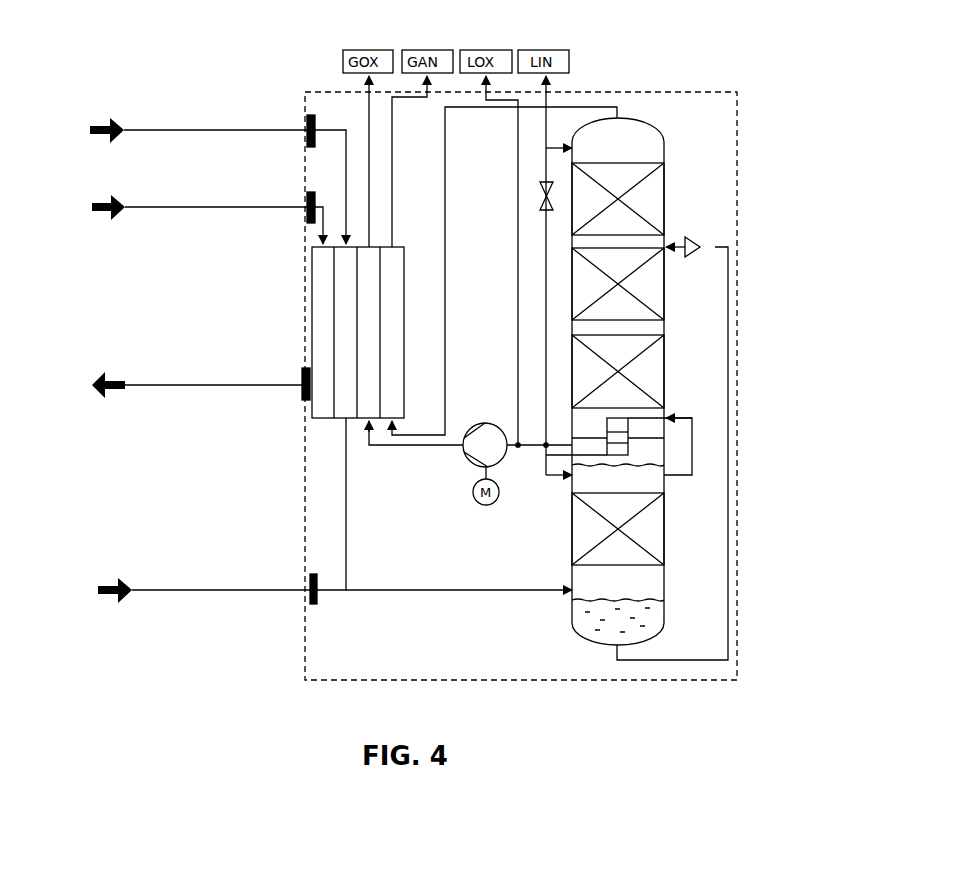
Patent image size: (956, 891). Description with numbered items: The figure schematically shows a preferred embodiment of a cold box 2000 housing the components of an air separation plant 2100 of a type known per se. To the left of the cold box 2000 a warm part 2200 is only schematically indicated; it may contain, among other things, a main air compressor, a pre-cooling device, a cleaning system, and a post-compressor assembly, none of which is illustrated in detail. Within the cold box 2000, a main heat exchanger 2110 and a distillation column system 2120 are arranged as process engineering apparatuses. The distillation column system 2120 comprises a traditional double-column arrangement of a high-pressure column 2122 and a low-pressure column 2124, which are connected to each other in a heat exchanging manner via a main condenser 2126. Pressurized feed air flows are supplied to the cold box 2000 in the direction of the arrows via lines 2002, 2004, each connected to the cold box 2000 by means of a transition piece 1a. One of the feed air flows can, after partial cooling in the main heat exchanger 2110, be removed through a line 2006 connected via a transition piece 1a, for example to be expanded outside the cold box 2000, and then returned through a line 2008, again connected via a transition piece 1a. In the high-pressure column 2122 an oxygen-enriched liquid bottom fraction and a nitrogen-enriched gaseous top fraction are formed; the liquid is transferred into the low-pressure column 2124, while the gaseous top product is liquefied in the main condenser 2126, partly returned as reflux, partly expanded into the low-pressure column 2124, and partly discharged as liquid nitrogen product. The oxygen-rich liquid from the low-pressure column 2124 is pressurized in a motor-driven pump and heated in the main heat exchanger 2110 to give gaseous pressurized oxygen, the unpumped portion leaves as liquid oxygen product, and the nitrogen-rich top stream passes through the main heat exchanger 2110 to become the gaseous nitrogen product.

The cold box 2000 is at (463, 682).
The air separation plant 2100 is at (814, 83).
The warm part 2200 is at (110, 492).
The line 2002 is at (152, 128).
The line 2004 is at (162, 206).
The line 2006 is at (170, 383).
The line 2008 is at (153, 587).
The transition piece 1a is at (308, 150).
The main heat exchanger 2110 is at (392, 275).
The distillation column system 2120 is at (689, 351).
The low-pressure column 2124 is at (687, 297).
The main condenser 2126 is at (680, 450).
The high-pressure column 2122 is at (684, 550).